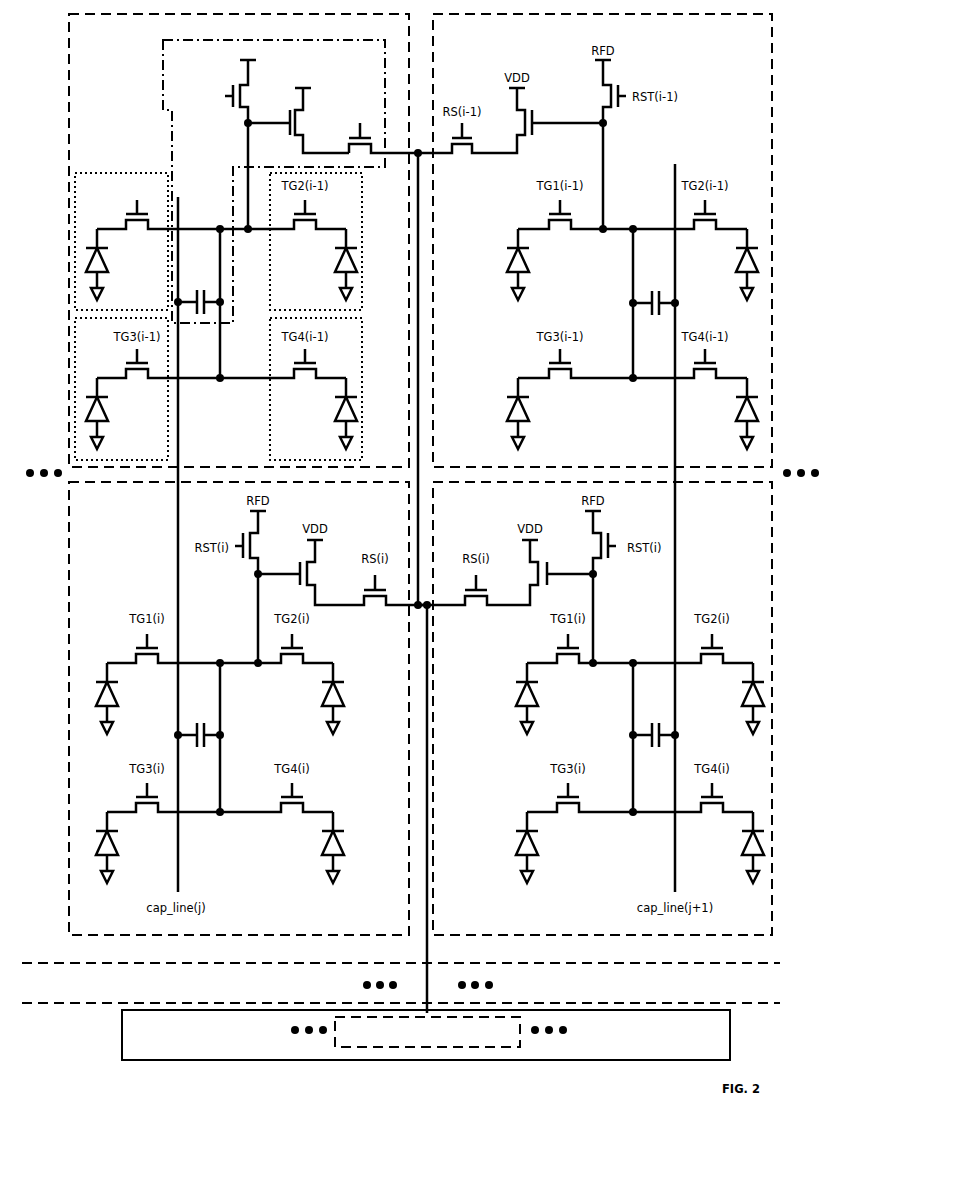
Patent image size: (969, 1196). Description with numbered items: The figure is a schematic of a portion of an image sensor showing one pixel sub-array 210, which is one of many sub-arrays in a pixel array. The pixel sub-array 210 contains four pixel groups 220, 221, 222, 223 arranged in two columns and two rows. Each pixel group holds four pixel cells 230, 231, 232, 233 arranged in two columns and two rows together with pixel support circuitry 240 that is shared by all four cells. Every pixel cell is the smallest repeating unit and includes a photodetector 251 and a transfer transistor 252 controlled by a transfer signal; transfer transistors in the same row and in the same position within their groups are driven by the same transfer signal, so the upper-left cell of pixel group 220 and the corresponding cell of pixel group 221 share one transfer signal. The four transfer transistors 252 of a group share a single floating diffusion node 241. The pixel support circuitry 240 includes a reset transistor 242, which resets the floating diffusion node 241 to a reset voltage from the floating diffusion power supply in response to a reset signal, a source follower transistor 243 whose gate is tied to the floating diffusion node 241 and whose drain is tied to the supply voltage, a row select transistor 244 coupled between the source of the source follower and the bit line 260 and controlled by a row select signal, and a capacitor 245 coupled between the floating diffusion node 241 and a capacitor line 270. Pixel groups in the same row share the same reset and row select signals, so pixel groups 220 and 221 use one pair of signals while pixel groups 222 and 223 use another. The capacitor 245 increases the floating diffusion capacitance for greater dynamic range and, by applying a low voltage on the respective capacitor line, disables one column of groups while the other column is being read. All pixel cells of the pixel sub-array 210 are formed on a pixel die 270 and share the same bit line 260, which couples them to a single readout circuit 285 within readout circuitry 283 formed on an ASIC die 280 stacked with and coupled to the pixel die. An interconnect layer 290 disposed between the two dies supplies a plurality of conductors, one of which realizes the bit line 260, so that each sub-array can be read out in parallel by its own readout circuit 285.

The pixel sub-array 210 is at (800, 24).
The pixel group 220 is at (154, 59).
The pixel group 221 is at (732, 59).
The pixel group 222 is at (155, 524).
The pixel group 223 is at (739, 524).
The pixel cell 230 is at (130, 299).
The pixel cell 231 is at (313, 302).
The pixel cell 232 is at (156, 456).
The pixel cell 233 is at (315, 456).
The pixel support circuitry 240 is at (384, 60).
The floating diffusion node 241 is at (218, 221).
The reset transistor 242 is at (224, 83).
The source follower transistor 243 is at (296, 112).
The row select transistor 244 is at (380, 136).
The capacitor 245 is at (199, 292).
The photodetector 251 is at (107, 264).
The transfer transistor 252 is at (158, 212).
The bit line 260 is at (434, 950).
The pixel die 270 is at (92, 954).
The ASIC die 280 is at (107, 1027).
The readout circuitry 283 is at (303, 1055).
The readout circuit 285 is at (511, 1039).
The interconnect layer 290 is at (200, 990).